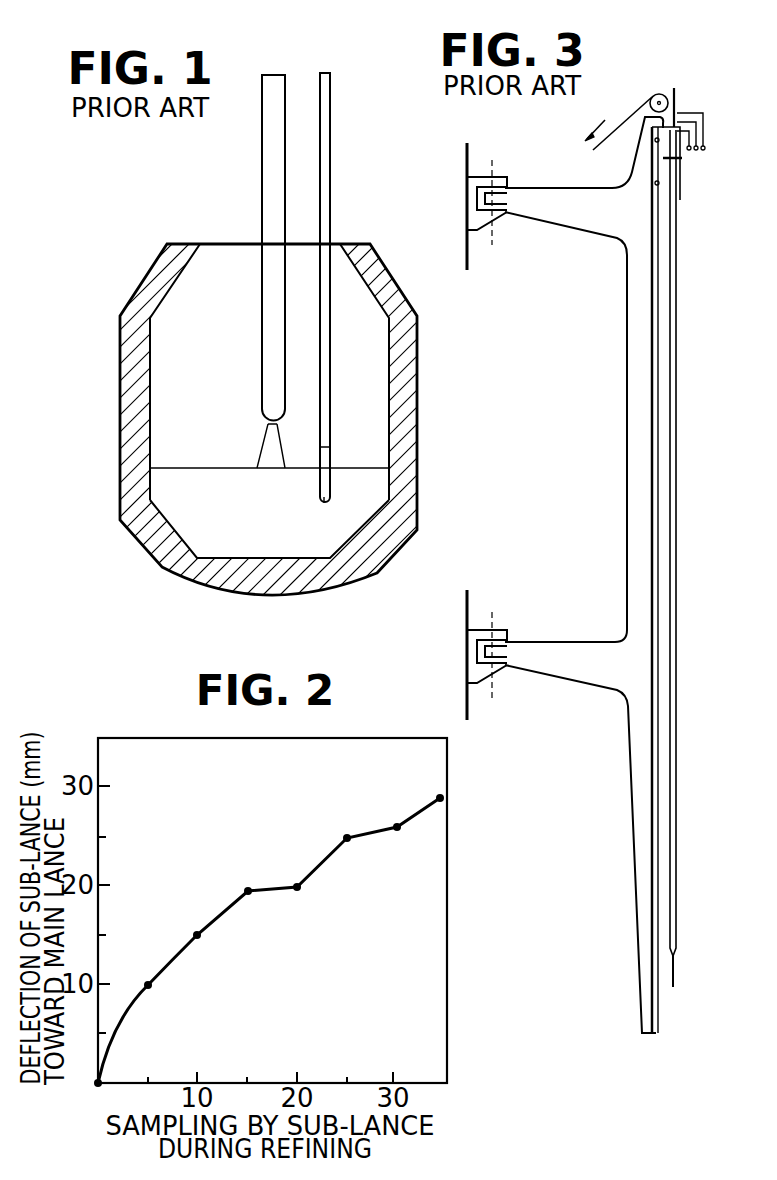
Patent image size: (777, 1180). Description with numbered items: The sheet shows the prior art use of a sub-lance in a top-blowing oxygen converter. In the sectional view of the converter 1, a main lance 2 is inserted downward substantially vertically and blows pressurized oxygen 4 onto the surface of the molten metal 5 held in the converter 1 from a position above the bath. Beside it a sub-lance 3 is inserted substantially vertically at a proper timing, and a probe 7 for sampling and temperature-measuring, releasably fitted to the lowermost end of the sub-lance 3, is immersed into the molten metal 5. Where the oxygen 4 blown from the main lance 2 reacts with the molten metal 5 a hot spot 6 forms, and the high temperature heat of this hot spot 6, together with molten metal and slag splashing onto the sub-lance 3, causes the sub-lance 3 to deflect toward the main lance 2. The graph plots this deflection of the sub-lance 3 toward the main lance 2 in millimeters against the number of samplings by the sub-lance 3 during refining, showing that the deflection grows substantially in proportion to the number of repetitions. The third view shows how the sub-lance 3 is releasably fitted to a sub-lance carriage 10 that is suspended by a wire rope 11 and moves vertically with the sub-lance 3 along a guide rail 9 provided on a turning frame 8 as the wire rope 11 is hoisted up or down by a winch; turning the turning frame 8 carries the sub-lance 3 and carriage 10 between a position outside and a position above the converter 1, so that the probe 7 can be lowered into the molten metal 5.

In FIG. 1, the top-blowing oxygen converter 1 is at (416, 352).
In FIG. 1, the main lance 2 is at (262, 181).
In FIG. 1, the sub-lance 3 is at (331, 183).
In FIG. 3, the sub-lance 3 is at (679, 697).
In FIG. 1, the oxygen 4 is at (265, 440).
In FIG. 1, the molten metal 5 is at (177, 528).
In FIG. 1, the hot spot 6 is at (270, 470).
In FIG. 1, the probe 7 is at (331, 485).
In FIG. 3, the probe 7 is at (674, 971).
In FIG. 3, the turning frame 8 is at (627, 322).
In FIG. 3, the guide rail 9 is at (659, 443).
In FIG. 3, the sub-lance carriage 10 is at (666, 179).
In FIG. 3, the wire rope 11 is at (640, 112).